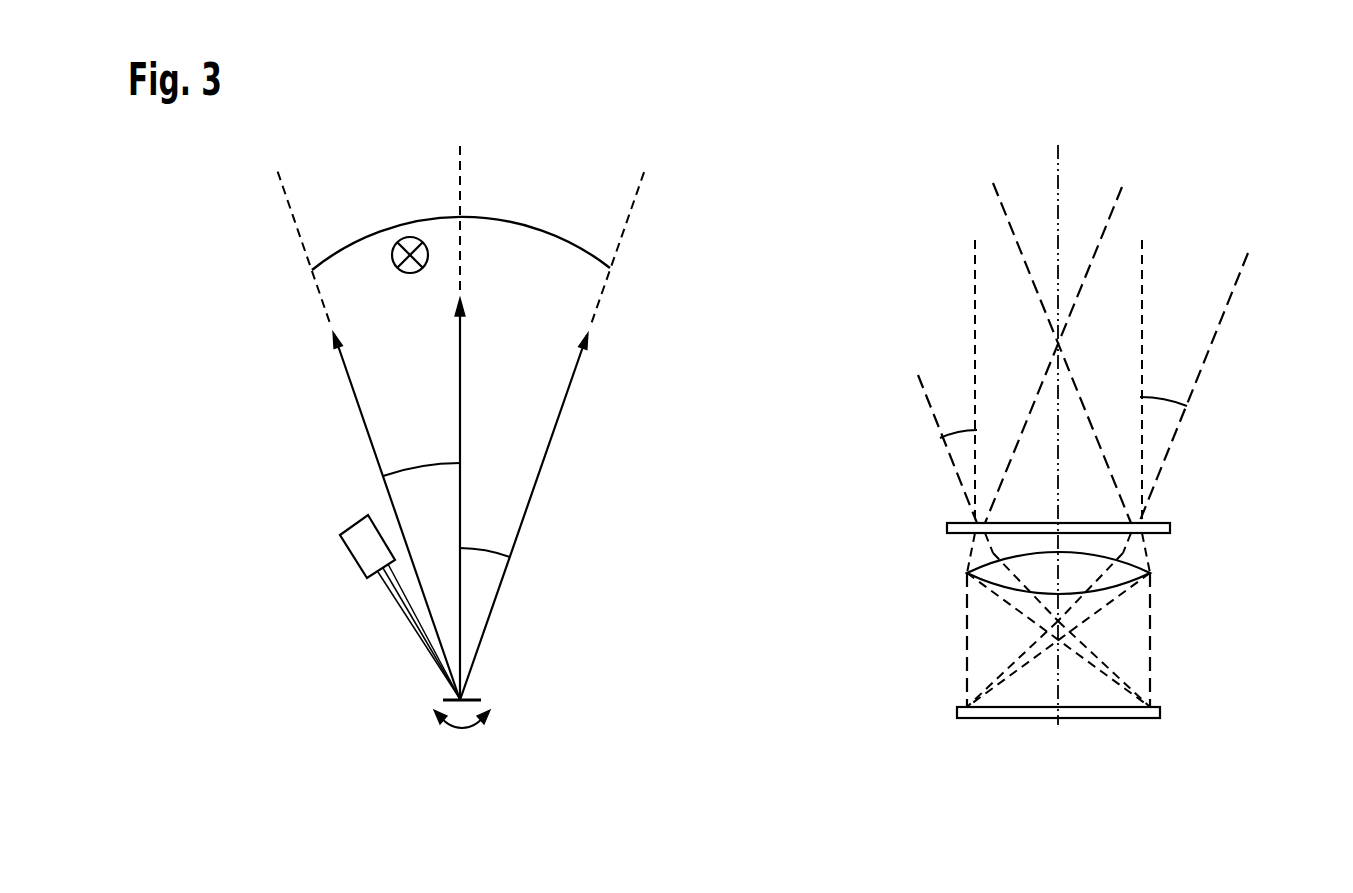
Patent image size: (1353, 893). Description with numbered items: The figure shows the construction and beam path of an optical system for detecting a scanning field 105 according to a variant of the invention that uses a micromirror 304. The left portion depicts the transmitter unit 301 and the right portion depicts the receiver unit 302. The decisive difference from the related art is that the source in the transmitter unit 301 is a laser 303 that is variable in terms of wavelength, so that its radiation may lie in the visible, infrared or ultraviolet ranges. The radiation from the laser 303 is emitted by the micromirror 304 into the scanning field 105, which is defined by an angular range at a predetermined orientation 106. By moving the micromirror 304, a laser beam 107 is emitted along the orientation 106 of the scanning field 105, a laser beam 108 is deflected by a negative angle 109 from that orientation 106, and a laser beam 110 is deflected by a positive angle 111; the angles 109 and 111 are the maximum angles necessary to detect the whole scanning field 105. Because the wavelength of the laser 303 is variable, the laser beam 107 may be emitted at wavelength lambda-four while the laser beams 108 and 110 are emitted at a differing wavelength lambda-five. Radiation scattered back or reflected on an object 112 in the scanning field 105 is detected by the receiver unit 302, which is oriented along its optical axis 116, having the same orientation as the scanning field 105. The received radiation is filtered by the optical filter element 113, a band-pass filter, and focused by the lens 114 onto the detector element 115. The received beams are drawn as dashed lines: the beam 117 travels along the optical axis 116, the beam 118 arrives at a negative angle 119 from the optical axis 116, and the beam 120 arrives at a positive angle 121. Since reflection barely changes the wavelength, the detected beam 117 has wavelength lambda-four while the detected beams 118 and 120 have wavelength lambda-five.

The transmitter unit 301 is at (238, 221).
The receiver unit 302 is at (836, 220).
The laser 303 is at (363, 557).
The micromirror 304 is at (445, 700).
The scanning field 105 is at (567, 266).
The orientation of scanning field 106 is at (465, 158).
The laser beam 107 is at (462, 370).
The laser beam 108 is at (546, 472).
The negative angle 109 is at (483, 597).
The laser beam 110 is at (348, 378).
The positive angle 111 is at (403, 497).
The object 112 is at (410, 237).
The optical filter element 113 is at (1172, 523).
The lens 114 is at (1152, 585).
The detector element 115 is at (1162, 714).
The optical axis 116 is at (1053, 158).
The beam 117 is at (1176, 275).
The beam 118 is at (1123, 190).
The negative angle 119 is at (1165, 440).
The beam 120 is at (922, 383).
The positive angle 121 is at (960, 460).